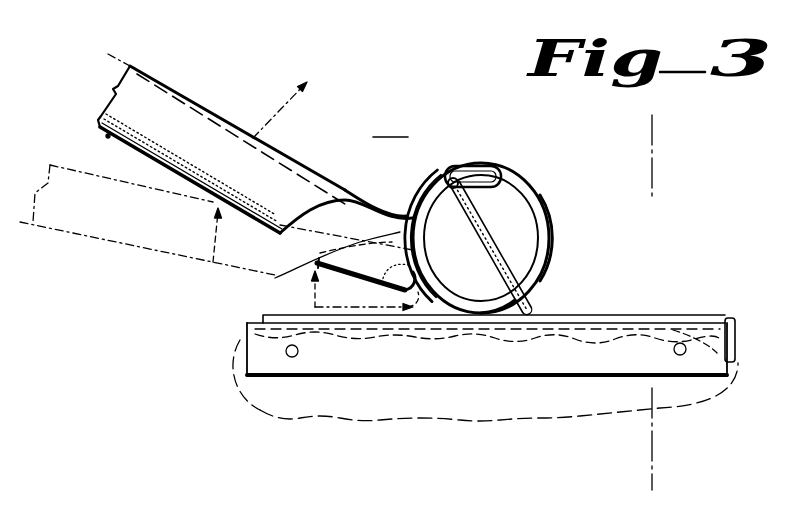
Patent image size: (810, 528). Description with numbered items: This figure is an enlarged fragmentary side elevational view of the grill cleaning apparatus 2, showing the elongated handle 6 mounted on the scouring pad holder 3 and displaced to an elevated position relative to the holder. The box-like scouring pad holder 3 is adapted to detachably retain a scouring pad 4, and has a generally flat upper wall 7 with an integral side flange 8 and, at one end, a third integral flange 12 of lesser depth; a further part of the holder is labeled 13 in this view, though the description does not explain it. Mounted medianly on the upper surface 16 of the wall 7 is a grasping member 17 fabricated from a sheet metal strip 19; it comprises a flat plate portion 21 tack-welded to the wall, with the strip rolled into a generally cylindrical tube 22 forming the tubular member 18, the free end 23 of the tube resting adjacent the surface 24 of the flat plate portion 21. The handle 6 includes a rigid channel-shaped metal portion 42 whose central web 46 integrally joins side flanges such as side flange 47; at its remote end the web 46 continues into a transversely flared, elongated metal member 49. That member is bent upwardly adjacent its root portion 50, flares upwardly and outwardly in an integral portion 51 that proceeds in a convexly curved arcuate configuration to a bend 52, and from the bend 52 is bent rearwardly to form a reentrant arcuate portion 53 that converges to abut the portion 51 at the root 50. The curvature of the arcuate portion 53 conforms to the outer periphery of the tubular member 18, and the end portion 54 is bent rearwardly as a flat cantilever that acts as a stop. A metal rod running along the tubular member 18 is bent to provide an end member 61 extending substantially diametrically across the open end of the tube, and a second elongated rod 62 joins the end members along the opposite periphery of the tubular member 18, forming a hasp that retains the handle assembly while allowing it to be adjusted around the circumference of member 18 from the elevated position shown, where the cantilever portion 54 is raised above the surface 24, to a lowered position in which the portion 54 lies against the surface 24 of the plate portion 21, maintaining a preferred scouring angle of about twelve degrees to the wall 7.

The grill cleaning apparatus 2 is at (473, 138).
The scouring pad holder 3 is at (657, 295).
The scouring pad 4 is at (390, 125).
The elongated handle 6 is at (170, 78).
The upper wall 7 is at (660, 137).
The side flange 8 is at (630, 358).
The third integral flange 12 is at (740, 342).
The base plate 13 is at (250, 358).
The upper surface 16 is at (675, 316).
The grasping member 17 is at (503, 218).
The tubular member 18 is at (520, 193).
The sheet metal strip 19 is at (277, 313).
The flat plate portion 21 is at (343, 308).
The cylindrical tube 22 is at (549, 267).
The free end 23 is at (446, 291).
The surface 24 is at (448, 302).
The channel-shaped metal portion 42 is at (251, 181).
The central web 46 is at (203, 104).
The side flange 47 is at (108, 137).
The elongated metal member 49 is at (449, 181).
The root portion 50 is at (412, 220).
The integral portion 51 is at (424, 190).
The bend 52 is at (499, 182).
The reentrant arcuate portion 53 is at (421, 240).
The end portion 54 is at (424, 273).
The end member 61 is at (500, 272).
The second elongated rod 62 is at (540, 311).